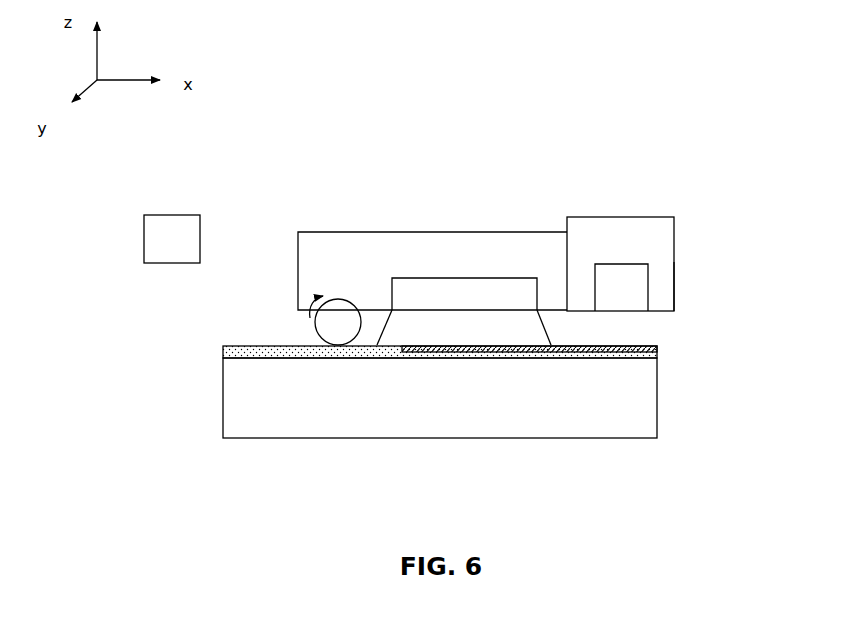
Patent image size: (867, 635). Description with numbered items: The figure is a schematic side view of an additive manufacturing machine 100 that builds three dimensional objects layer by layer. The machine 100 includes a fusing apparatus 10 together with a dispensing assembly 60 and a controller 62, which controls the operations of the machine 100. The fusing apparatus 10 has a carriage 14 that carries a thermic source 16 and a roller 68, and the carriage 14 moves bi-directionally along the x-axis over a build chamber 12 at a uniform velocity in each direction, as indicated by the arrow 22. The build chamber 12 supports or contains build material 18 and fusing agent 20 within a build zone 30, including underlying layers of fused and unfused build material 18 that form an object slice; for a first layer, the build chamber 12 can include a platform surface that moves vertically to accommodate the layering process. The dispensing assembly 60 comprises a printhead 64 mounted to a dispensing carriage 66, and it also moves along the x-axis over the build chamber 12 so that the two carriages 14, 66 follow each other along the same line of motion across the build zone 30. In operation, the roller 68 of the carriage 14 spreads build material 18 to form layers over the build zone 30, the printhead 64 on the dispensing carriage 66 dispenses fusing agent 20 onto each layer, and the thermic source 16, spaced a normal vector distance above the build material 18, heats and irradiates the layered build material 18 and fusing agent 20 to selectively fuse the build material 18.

The additive manufacturing machine 100 is at (700, 96).
The fusing apparatus 10 is at (308, 207).
The build chamber 12 is at (440, 398).
The carriage 14 is at (297, 243).
The thermic source 16 is at (500, 277).
The build material 18 is at (226, 350).
The fusing agent 20 is at (658, 354).
The arrow 22 is at (477, 167).
The build zone 30 is at (657, 458).
The dispensing assembly 60 is at (644, 199).
The controller 62 is at (172, 239).
The printhead 64 is at (648, 280).
The dispensing carriage 66 is at (675, 293).
The roller 68 is at (300, 304).